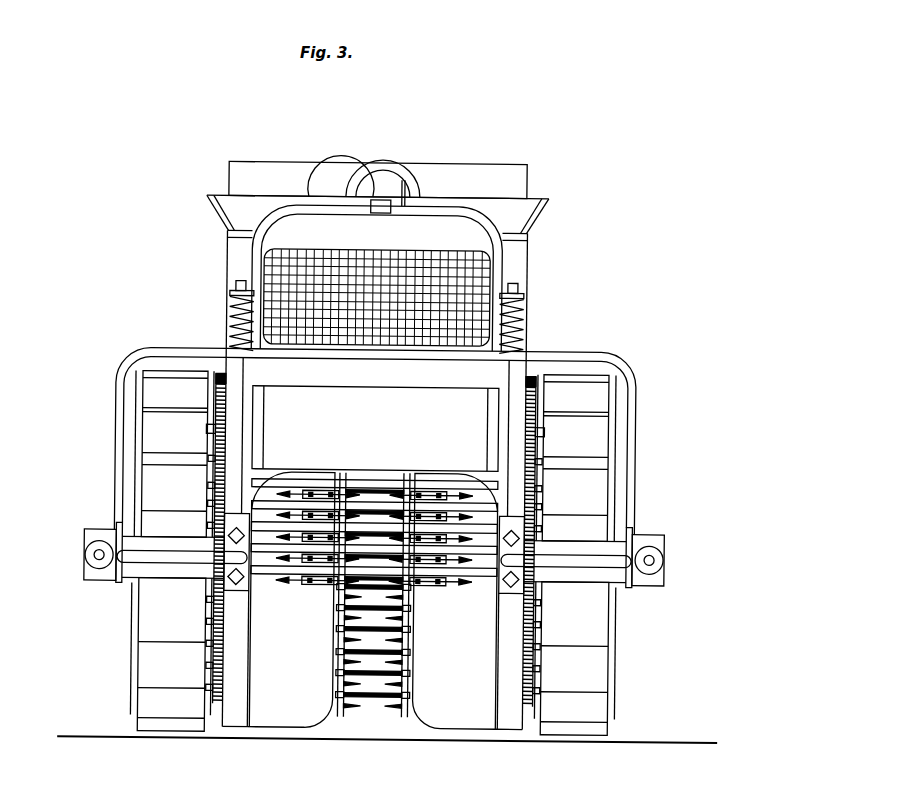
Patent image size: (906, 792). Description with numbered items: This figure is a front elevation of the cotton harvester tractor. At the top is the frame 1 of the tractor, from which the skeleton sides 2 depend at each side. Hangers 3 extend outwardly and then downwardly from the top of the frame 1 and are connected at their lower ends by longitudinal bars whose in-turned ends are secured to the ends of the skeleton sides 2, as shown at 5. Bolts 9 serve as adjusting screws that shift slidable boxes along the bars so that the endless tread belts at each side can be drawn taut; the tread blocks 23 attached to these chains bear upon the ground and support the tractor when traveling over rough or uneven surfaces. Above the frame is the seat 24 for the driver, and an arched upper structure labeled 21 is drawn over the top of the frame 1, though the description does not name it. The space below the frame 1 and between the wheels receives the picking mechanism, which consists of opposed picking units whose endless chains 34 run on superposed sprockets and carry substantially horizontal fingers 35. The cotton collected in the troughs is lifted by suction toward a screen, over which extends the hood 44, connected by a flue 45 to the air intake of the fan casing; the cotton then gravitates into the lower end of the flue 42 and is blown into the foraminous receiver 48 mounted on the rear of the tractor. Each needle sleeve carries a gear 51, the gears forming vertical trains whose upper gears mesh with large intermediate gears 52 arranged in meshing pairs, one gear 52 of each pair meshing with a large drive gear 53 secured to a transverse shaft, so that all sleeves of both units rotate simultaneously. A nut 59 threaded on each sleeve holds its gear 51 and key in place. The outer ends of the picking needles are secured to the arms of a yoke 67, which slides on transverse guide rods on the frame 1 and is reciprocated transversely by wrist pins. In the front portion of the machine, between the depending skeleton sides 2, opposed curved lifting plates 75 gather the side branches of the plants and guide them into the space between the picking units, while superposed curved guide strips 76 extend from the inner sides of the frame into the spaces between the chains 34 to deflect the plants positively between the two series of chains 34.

The frame 1 is at (492, 373).
The skeleton sides 2 is at (236, 419).
The hangers 3 is at (627, 412).
The in-turned secured ends 5 is at (167, 566).
The bolts 9 is at (92, 559).
The arched hood 21 is at (475, 208).
The tread blocks 23 is at (157, 481).
The seat 24 is at (225, 220).
The endless chains 34 is at (330, 583).
The fingers 35 is at (312, 584).
The flue 42 is at (380, 193).
The hood 44 is at (383, 177).
The flue 45 is at (333, 182).
The foraminous receiver 48 is at (297, 172).
The gear 51 is at (220, 598).
The intermediate gears 52 is at (218, 440).
The drive gear 53 is at (224, 388).
The nut 59 is at (211, 695).
The yoke 67 is at (208, 431).
The curved lifting plates 75 is at (373, 601).
The guide strips 76 is at (273, 567).